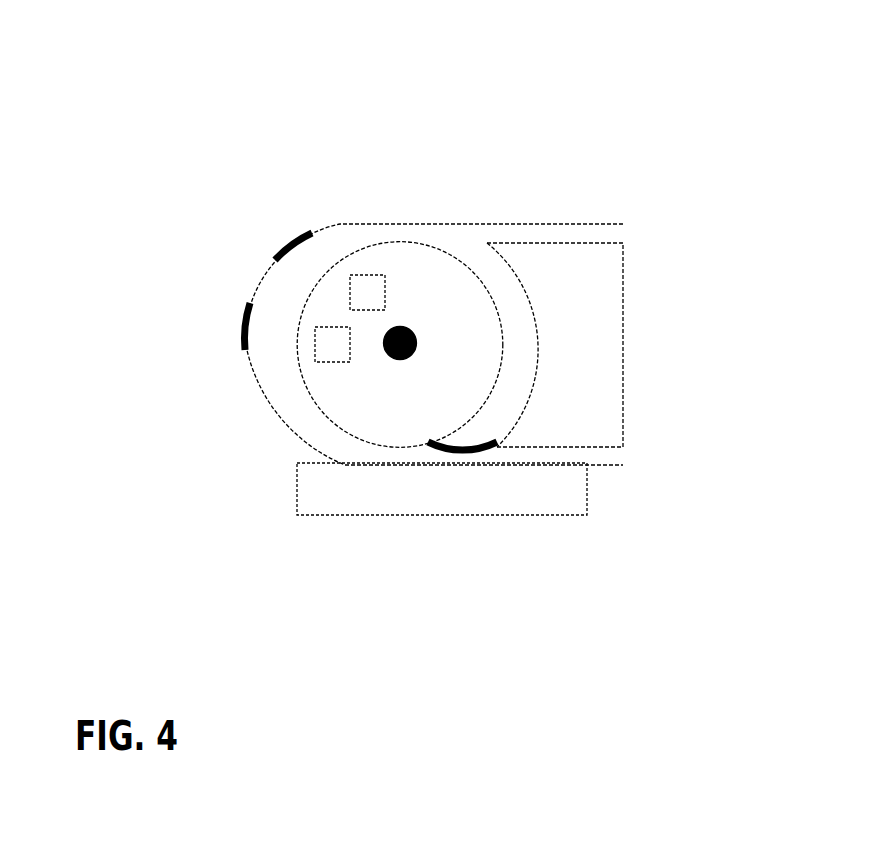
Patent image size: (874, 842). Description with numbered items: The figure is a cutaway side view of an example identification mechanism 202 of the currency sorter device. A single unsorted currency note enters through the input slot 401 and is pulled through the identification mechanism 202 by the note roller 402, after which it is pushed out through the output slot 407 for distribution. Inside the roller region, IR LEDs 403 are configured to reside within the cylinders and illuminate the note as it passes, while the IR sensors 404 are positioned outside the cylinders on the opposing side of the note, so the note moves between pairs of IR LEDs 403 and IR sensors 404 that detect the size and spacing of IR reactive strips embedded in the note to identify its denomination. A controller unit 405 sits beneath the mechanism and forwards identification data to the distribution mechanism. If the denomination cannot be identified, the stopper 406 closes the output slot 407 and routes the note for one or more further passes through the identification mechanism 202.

The identification mechanism 202 is at (152, 84).
The input slot 401 is at (642, 225).
The note roller 402 is at (383, 397).
The IR LEDs 403 is at (333, 327).
The IR sensors 404 is at (287, 243).
The controller unit 405 is at (442, 489).
The stopper 406 is at (472, 452).
The output slot 407 is at (638, 449).